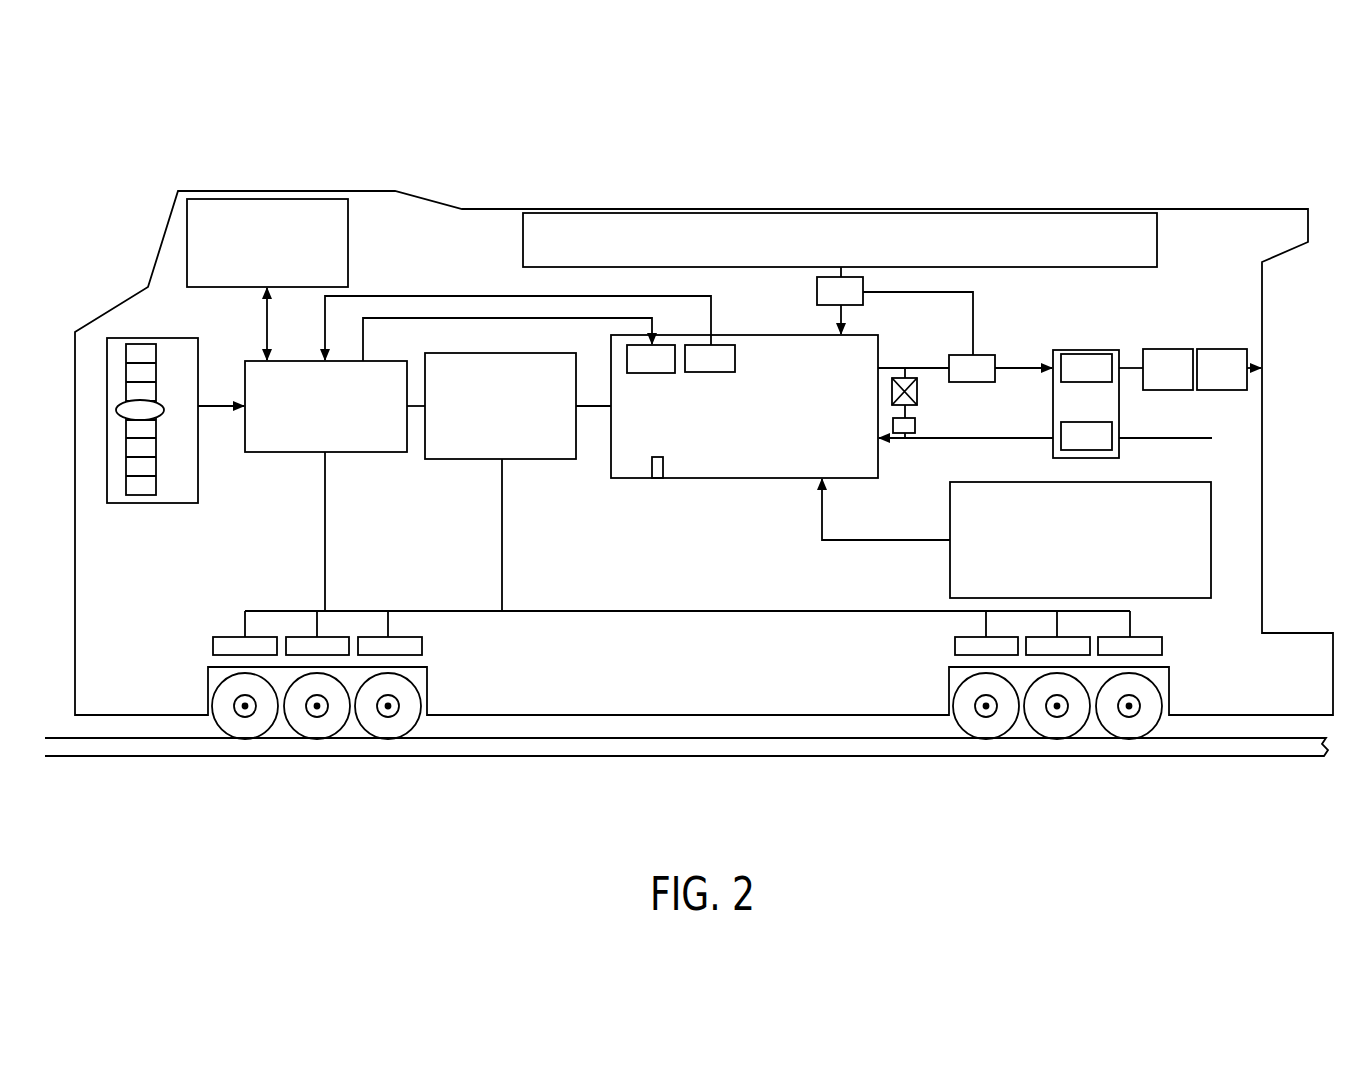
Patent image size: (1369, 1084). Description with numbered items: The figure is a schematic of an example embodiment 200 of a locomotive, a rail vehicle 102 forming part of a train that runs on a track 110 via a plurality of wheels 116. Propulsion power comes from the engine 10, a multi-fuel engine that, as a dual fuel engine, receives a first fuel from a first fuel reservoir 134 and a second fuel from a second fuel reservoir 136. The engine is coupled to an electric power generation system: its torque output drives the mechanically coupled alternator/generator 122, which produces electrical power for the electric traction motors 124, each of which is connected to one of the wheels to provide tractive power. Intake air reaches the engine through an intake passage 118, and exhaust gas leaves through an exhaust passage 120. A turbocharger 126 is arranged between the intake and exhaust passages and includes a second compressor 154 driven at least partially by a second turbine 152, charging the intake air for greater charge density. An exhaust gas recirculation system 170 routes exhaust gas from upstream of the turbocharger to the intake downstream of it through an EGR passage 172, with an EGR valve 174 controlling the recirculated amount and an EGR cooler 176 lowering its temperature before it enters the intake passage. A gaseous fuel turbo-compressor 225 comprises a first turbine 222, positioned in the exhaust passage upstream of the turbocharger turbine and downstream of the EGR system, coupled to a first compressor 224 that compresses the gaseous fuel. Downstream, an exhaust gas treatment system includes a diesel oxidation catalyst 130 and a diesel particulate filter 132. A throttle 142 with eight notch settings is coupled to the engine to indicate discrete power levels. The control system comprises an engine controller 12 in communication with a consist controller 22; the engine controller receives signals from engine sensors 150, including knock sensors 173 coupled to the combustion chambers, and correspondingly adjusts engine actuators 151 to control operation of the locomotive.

The locomotive embodiment 200 is at (1268, 122).
The rail vehicle 102 is at (987, 209).
The track 110 is at (1238, 757).
The throttle 142 is at (130, 338).
The consist controller 22 is at (257, 283).
The engine controller 12 is at (316, 443).
The alternator/generator 122 is at (484, 430).
The engine 10 is at (734, 430).
The engine actuators 151 is at (651, 359).
The engine sensors 150 is at (710, 358).
The knock sensors 173 is at (650, 471).
The first fuel reservoir 134 is at (892, 251).
The first compressor 224 is at (840, 305).
The gaseous fuel turbo-compressor 225 is at (983, 290).
The first turbine 222 is at (965, 368).
The exhaust gas recirculation system 170 is at (897, 361).
The EGR valve 174 is at (912, 380).
The EGR passage 172 is at (915, 418).
The EGR cooler 176 is at (906, 440).
The intake passage 118 is at (1138, 439).
The exhaust passage 120 is at (1029, 358).
The turbocharger 126 is at (1120, 413).
The second turbine 152 is at (1103, 379).
The second compressor 154 is at (1103, 447).
The diesel oxidation catalyst 130 is at (1151, 380).
The diesel particulate filter 132 is at (1205, 380).
The second fuel reservoir 136 is at (1131, 553).
The electric traction motors 124 is at (421, 637).
The wheels 116 is at (414, 693).